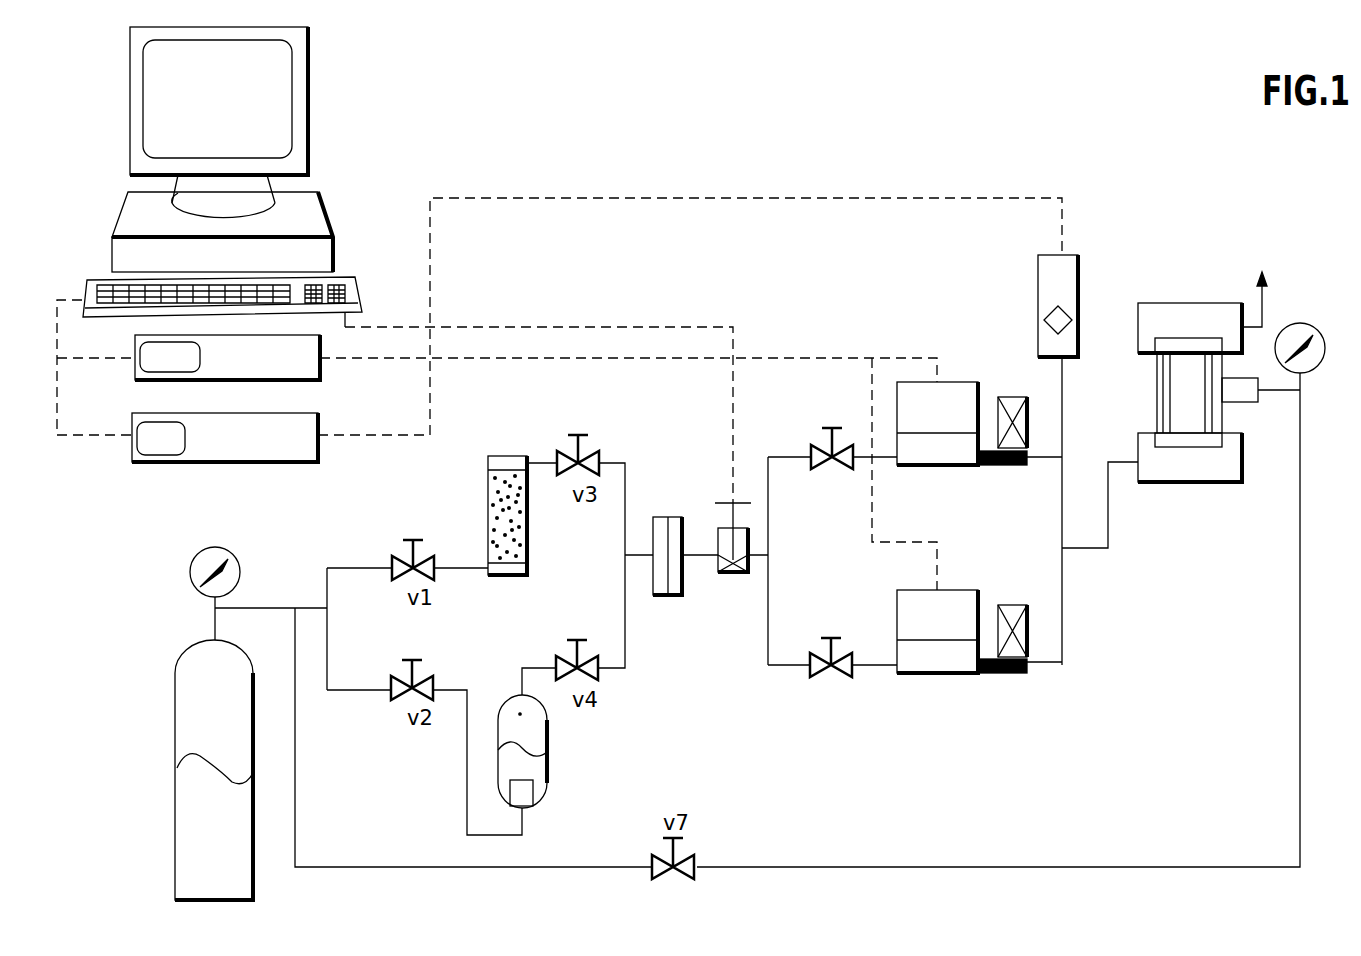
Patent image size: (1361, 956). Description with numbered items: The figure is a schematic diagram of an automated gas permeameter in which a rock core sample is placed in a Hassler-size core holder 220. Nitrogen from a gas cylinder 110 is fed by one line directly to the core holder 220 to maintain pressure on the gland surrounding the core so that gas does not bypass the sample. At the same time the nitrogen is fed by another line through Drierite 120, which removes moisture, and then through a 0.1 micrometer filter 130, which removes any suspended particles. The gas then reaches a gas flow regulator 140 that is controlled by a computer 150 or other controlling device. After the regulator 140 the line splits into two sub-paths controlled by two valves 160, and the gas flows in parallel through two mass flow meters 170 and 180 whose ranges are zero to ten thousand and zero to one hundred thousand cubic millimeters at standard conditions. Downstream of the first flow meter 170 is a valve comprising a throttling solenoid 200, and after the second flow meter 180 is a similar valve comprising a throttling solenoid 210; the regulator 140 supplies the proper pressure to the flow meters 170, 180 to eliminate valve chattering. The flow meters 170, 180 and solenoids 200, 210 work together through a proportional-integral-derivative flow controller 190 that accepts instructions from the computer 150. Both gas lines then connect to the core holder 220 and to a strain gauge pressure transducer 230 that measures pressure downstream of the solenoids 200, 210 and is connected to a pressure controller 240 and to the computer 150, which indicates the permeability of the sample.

The gas cylinder 110 is at (175, 727).
The Drierite 120 is at (488, 492).
The 0.1 micrometer filter 130 is at (670, 597).
The gas flow regulator 140 is at (722, 580).
The computer 150 is at (308, 63).
The valves 160 is at (838, 428).
The first mass flow meter 170 is at (915, 467).
The second mass flow meter 180 is at (915, 675).
The proportional-integral-derivative flow controller 190 is at (323, 367).
The solenoid 200 is at (1022, 397).
The throttling solenoid 210 is at (1022, 605).
The Hassler core holder 220 is at (1222, 365).
The strain gauge pressure transducer 230 is at (1082, 272).
The pressure controller 240 is at (193, 462).